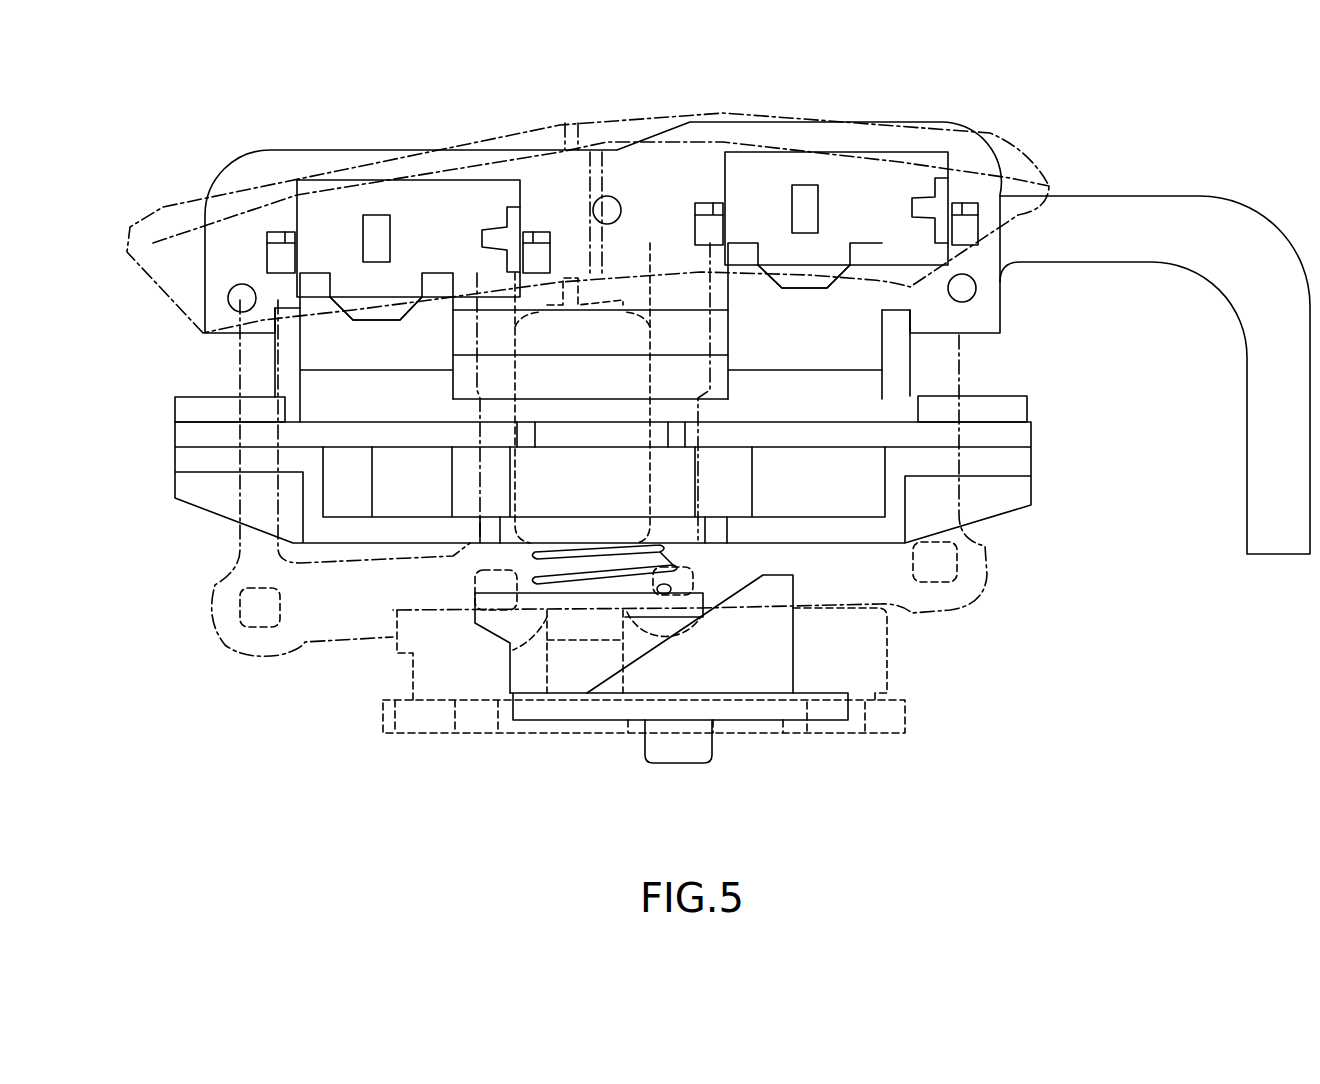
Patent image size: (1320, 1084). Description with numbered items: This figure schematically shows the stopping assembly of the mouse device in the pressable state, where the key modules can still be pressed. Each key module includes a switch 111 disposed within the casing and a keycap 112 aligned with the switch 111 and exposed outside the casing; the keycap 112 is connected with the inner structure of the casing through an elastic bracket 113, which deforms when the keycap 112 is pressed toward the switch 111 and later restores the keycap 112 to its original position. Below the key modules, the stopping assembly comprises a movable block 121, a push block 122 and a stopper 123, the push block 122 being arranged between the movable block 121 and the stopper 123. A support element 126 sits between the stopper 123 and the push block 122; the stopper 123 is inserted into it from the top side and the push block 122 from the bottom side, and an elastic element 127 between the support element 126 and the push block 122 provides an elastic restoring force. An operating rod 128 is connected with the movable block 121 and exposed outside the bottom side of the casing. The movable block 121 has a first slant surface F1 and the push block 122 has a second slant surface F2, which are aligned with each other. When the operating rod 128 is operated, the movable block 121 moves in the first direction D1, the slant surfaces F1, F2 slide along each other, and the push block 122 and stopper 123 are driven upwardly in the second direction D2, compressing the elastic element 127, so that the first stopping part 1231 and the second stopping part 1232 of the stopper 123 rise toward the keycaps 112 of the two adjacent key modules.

The switch 111 is at (443, 210).
The keycap 112 is at (175, 202).
The elastic bracket 113 is at (238, 528).
The movable block 121 is at (777, 675).
The push block 122 is at (522, 665).
The stopper 123 is at (590, 332).
The first stopping part 1231 is at (367, 343).
The second stopping part 1232 is at (850, 340).
The support element 126 is at (1019, 458).
The elastic element 127 is at (582, 572).
The operating rod 128 is at (695, 748).
The first slant surface F1 is at (668, 640).
The second slant surface F2 is at (640, 657).
The first direction D1 is at (873, 768).
The second direction D2 is at (185, 586).